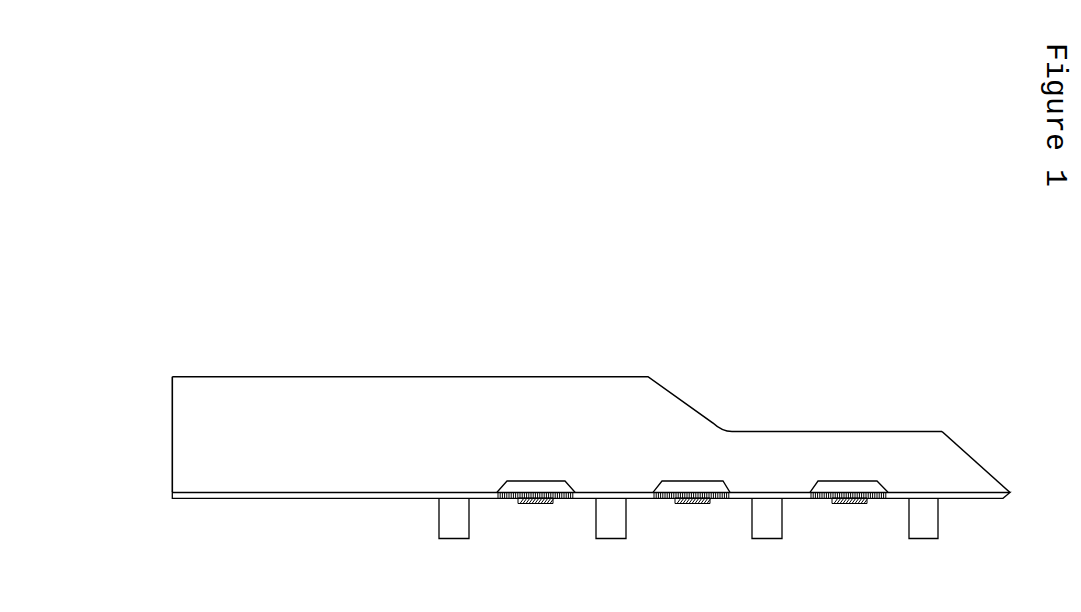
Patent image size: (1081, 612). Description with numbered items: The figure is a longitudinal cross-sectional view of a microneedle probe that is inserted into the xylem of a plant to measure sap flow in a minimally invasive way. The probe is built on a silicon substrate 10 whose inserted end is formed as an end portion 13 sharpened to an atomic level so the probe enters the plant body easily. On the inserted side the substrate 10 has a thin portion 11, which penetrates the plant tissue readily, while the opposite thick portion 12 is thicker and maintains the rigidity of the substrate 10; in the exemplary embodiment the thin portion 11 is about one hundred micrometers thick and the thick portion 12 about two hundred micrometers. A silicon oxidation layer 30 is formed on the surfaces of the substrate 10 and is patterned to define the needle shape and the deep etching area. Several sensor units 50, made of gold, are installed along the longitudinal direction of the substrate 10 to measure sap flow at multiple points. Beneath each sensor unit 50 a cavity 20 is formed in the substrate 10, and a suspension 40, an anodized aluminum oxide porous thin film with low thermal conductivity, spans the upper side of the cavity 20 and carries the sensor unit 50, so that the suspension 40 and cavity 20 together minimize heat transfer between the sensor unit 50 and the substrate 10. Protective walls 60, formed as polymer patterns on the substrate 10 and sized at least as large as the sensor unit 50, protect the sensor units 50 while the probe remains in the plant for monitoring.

The substrate 10 is at (760, 371).
The thin portion 11 is at (853, 443).
The thick portion 12 is at (643, 412).
The end portion 13 is at (1008, 490).
The cavity 20 is at (537, 481).
The silicon oxidation layer 30 is at (388, 497).
The suspension 40 is at (659, 498).
The sensor unit 50 is at (689, 504).
The protective wall 60 is at (765, 533).